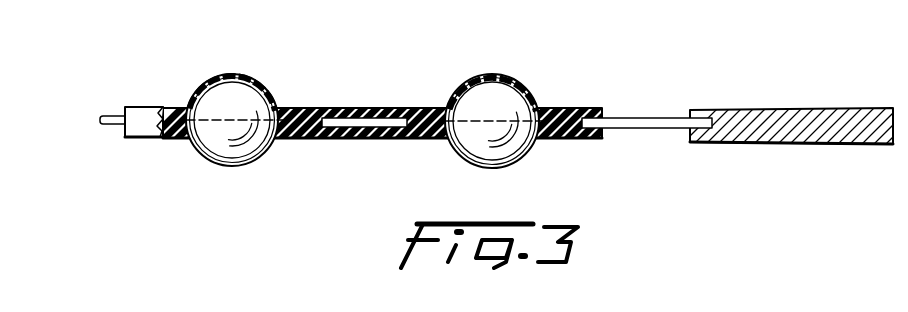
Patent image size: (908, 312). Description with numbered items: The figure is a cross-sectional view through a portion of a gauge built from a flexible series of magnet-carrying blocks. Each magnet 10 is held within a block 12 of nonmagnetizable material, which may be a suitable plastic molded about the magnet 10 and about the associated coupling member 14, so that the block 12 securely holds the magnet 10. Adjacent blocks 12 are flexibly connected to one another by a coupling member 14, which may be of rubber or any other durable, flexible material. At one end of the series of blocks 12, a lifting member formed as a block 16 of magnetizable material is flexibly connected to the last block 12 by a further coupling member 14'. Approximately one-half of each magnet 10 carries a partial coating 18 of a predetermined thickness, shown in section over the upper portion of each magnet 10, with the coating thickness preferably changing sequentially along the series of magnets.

The magnet 10 is at (252, 158).
The block of nonmagnetizable material 12 is at (312, 108).
The coupling member 14 is at (367, 88).
The coupling member 14' is at (647, 98).
The block of magnetizable material 16 is at (785, 111).
The partial coating 18 is at (253, 78).